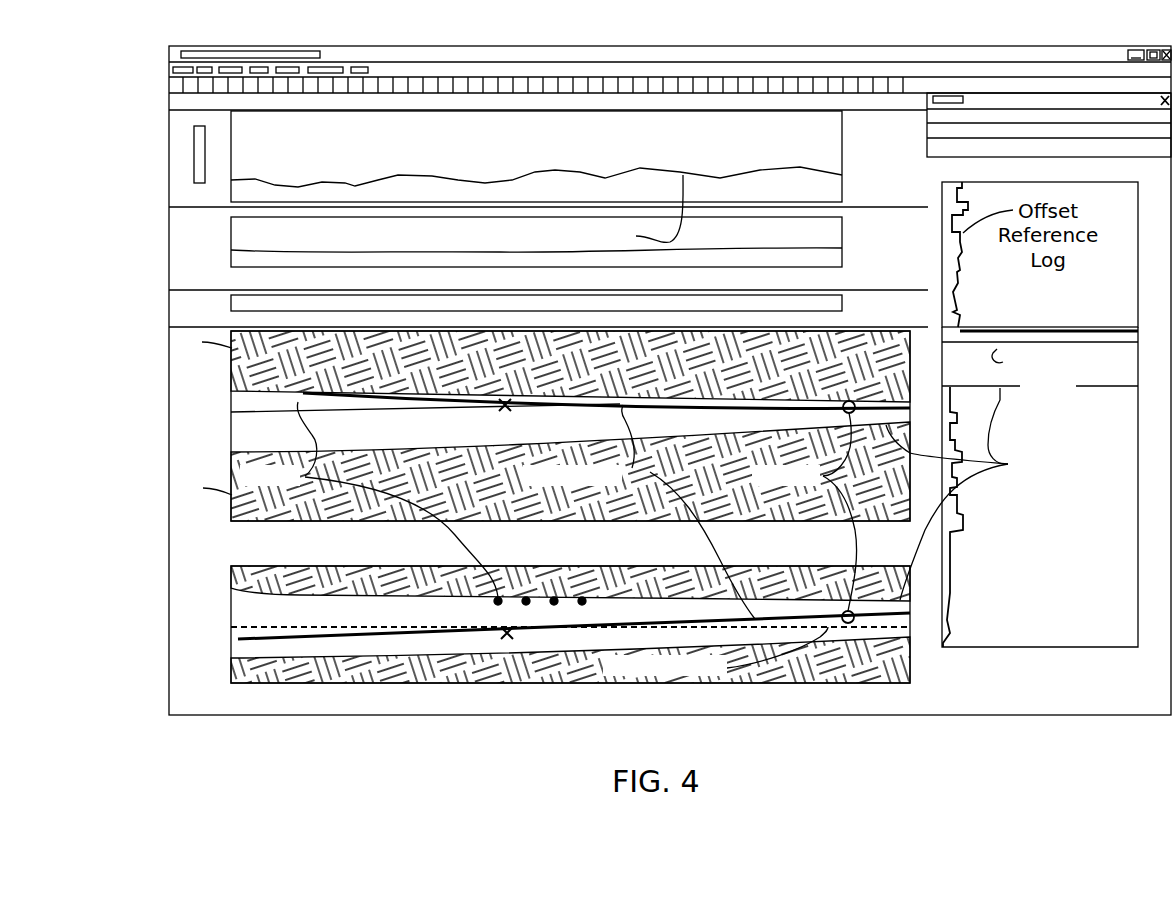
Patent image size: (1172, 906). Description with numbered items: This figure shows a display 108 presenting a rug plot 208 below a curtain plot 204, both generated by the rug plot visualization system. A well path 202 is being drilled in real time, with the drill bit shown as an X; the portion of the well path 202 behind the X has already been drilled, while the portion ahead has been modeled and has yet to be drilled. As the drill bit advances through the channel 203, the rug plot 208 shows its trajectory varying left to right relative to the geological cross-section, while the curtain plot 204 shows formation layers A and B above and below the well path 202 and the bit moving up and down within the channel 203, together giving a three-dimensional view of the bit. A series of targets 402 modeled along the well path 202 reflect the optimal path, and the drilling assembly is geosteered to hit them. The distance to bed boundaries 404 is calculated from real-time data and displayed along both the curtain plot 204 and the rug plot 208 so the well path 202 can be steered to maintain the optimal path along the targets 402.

The display 108 is at (533, 46).
The well path 202 is at (688, 485).
The channel 203 is at (1012, 487).
The curtain plot 204 is at (168, 418).
The rug plot 208 is at (168, 628).
The targets 402 is at (838, 498).
The distance to bed boundaries (DTBB) 404 is at (413, 503).